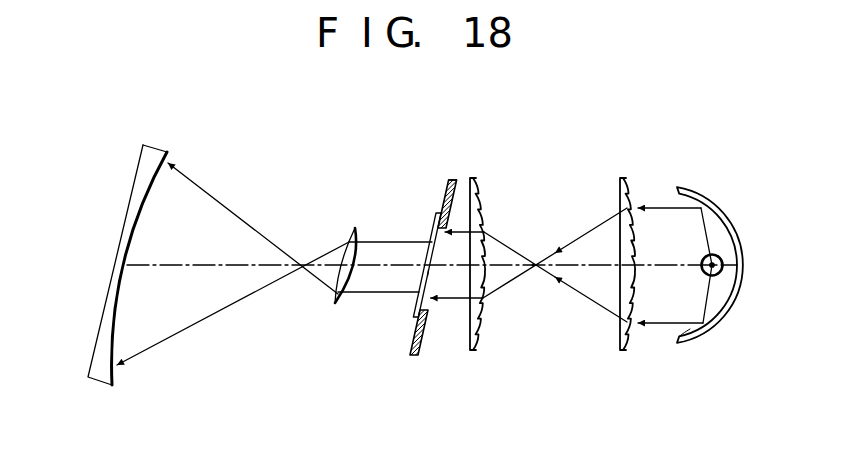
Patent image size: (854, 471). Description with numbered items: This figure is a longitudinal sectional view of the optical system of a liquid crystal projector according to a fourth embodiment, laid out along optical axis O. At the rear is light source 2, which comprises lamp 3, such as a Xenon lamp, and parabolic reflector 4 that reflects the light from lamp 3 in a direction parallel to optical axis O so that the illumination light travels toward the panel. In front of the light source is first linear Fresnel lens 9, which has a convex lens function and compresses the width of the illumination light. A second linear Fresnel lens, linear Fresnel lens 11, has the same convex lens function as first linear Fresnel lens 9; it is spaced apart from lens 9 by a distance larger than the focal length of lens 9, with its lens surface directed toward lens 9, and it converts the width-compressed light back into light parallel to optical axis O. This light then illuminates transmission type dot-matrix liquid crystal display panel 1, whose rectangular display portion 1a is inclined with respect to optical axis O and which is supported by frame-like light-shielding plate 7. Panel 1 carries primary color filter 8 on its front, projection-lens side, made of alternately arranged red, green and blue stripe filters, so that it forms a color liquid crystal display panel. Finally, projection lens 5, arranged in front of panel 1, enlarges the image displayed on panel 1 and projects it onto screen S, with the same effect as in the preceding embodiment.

The screen S is at (100, 325).
The liquid crystal display panel 1 is at (413, 318).
The display portion 1a is at (430, 275).
The light source 2 is at (723, 211).
The lamp 3 is at (703, 259).
The parabolic reflector 4 is at (698, 334).
The projection lens 5 is at (336, 299).
The light-shielding plate 7 is at (449, 196).
The primary color filter 8 is at (432, 226).
The first linear Fresnel lens 9 is at (626, 176).
The linear Fresnel lens 11 is at (479, 176).
The optical axis O is at (566, 270).